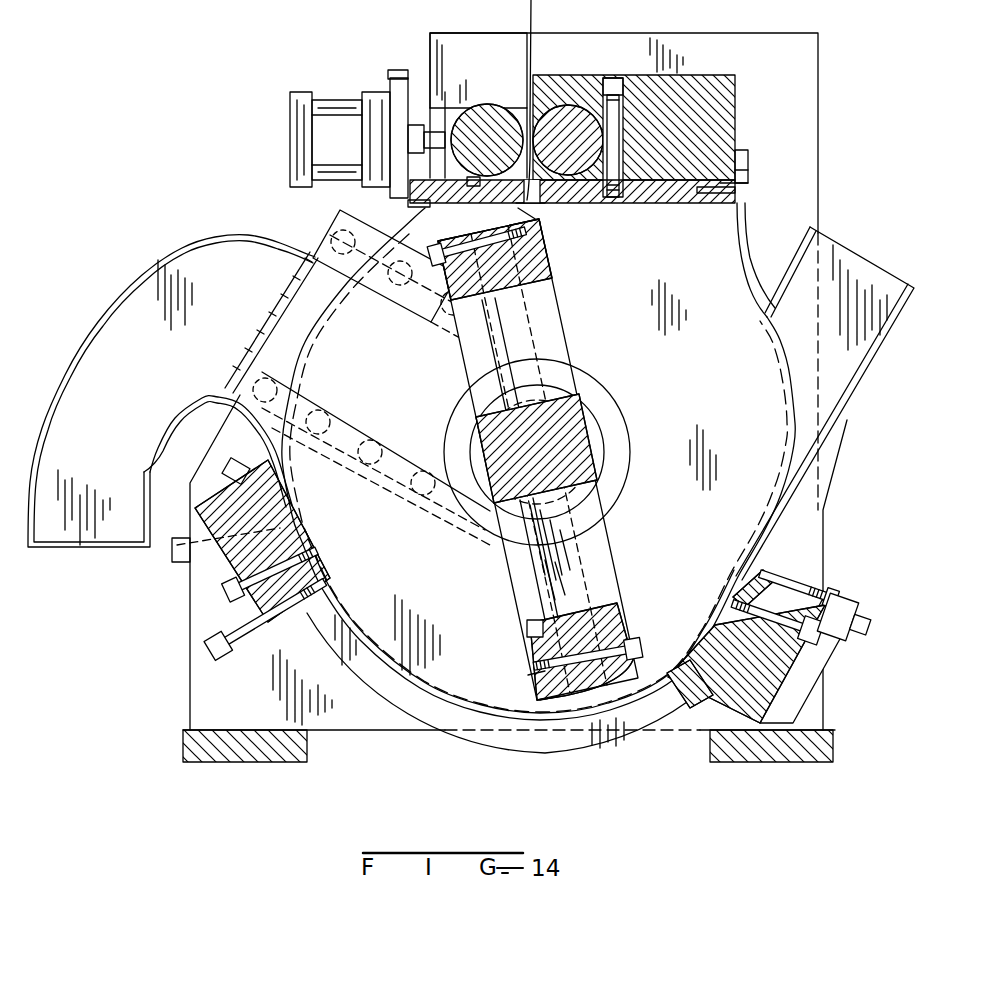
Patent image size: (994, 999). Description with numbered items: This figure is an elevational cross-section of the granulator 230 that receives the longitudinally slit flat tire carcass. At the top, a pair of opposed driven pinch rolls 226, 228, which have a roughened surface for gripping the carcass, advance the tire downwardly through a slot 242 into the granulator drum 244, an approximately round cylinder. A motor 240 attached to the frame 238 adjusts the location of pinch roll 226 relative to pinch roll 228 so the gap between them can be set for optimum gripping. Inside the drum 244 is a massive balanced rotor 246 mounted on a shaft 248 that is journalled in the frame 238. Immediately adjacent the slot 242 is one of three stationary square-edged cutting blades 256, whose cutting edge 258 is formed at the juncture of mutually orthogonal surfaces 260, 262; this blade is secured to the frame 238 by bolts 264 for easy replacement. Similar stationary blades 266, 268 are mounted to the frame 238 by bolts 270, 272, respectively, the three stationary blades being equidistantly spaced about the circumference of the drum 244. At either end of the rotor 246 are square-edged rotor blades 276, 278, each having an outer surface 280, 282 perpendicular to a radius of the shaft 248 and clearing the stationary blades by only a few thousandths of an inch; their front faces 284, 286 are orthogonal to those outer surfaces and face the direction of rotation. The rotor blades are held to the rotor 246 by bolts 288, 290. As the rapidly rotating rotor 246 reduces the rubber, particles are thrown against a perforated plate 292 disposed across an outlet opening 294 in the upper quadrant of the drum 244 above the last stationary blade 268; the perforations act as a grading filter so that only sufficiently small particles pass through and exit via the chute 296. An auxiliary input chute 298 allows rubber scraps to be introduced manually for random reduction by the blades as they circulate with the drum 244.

The pinch roll 226 is at (487, 105).
The pinch roll 228 is at (567, 107).
The granulator 230 is at (782, 205).
The frame 238 is at (190, 700).
The motor 240 is at (330, 93).
The slot 242 is at (537, 204).
The granulator drum 244 is at (745, 265).
The rotor 246 is at (612, 545).
The shaft 248 is at (587, 427).
The stationary cutting blade 256 is at (657, 203).
The cutting edge 258 is at (530, 227).
The surface 260 is at (522, 100).
The surface 262 is at (603, 210).
The bolts 264 is at (607, 205).
The stationary blade 266 is at (740, 580).
The stationary blade 268 is at (323, 567).
The bolts 270 is at (750, 603).
The bolts 272 is at (317, 552).
The rotor blade 276 is at (543, 263).
The rotor blade 278 is at (523, 648).
The outer surface 280 is at (340, 210).
The outer surface 282 is at (545, 702).
The front face 284 is at (533, 682).
The front face 286 is at (547, 250).
The bolts 288 is at (413, 292).
The bolts 290 is at (640, 642).
The perforated plate 292 is at (275, 315).
The outlet opening 294 is at (310, 330).
The chute 296 is at (195, 238).
The auxiliary input chute 298 is at (877, 360).